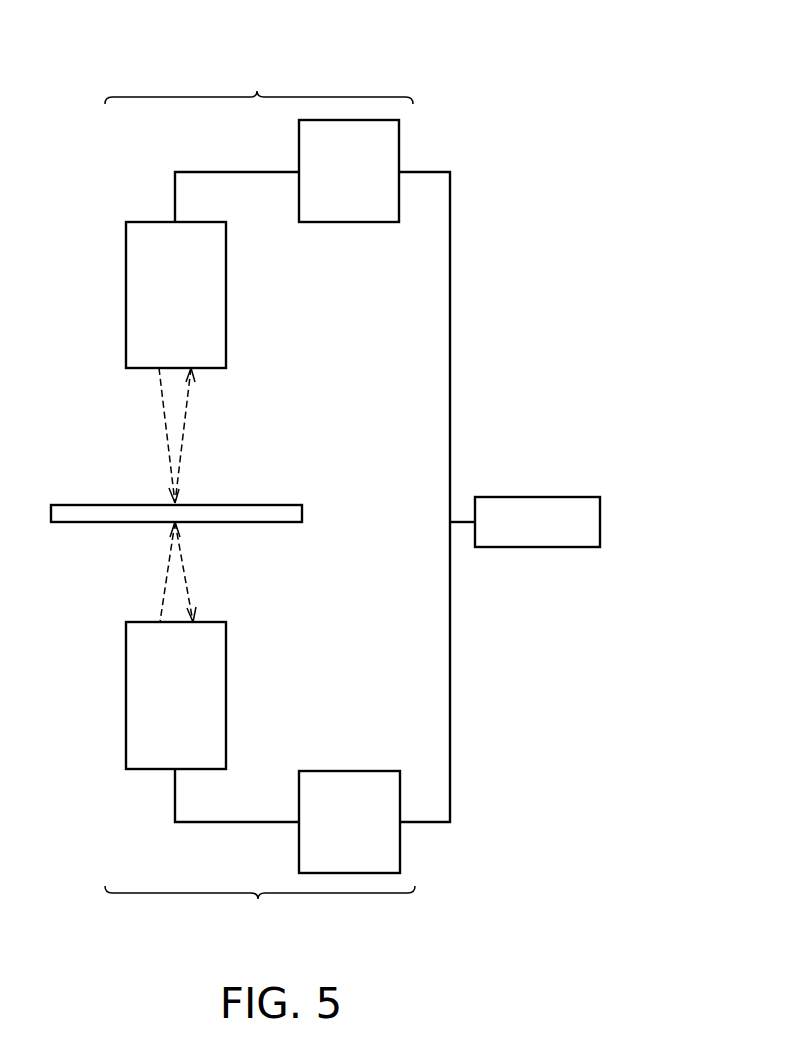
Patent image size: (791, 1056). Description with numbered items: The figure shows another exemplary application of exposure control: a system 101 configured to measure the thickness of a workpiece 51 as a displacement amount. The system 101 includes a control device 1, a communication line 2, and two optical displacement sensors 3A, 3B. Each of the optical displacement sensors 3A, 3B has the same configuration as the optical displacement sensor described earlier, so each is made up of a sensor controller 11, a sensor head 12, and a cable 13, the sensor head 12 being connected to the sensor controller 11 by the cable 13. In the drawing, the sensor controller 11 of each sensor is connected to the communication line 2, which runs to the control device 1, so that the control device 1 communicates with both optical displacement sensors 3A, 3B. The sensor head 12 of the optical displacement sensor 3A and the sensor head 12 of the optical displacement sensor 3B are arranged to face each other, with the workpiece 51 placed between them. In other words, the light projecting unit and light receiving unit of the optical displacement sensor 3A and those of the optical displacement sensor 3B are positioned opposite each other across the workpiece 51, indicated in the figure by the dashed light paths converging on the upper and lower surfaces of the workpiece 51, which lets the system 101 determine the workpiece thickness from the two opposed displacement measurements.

The system 101 is at (447, 70).
The optical displacement sensor 3A is at (259, 87).
The optical displacement sensor 3B is at (260, 904).
The sensor controller 11 is at (399, 139).
The sensor head 12 is at (202, 222).
The cable 13 is at (225, 168).
The workpiece 51 is at (72, 505).
The communication line 2 is at (450, 247).
The control device 1 is at (573, 497).